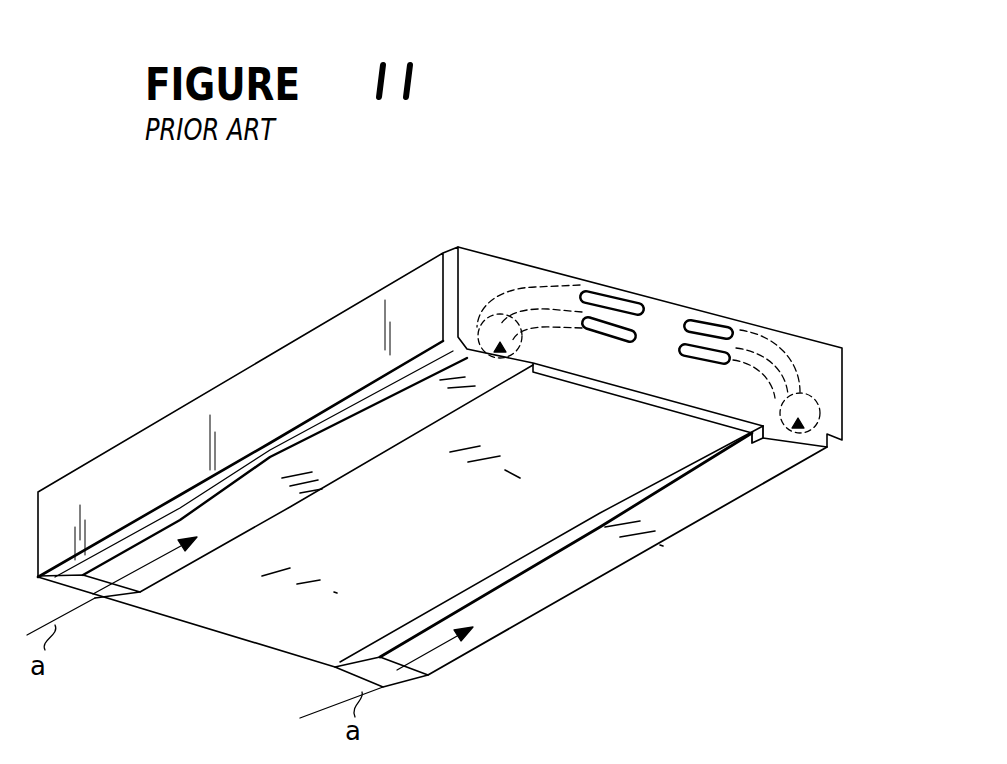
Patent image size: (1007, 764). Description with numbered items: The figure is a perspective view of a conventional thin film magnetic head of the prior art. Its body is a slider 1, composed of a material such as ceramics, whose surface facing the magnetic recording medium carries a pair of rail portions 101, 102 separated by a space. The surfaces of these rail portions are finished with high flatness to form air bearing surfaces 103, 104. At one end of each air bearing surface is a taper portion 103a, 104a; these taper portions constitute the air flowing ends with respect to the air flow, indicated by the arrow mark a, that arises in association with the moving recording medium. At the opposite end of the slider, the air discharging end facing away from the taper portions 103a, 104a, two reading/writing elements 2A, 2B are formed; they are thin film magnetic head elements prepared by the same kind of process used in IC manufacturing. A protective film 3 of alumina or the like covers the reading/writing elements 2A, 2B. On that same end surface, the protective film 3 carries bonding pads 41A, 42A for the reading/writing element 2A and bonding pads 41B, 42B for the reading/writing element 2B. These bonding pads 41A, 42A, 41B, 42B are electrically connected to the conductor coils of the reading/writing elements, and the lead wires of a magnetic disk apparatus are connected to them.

The slider 1 is at (193, 430).
The protective film 3 is at (810, 342).
The rail portion 101 is at (150, 530).
The rail portion 102 is at (553, 548).
The air bearing surface 103 is at (330, 458).
The taper portion 103a is at (113, 597).
The air bearing surface 104 is at (674, 499).
The taper portion 104a is at (400, 680).
The reading/writing element 2A is at (480, 328).
The reading/writing element 2B is at (820, 418).
The bonding pad 41A is at (622, 302).
The bonding pad 42A is at (640, 322).
The bonding pad 41B is at (700, 328).
The bonding pad 42B is at (700, 355).